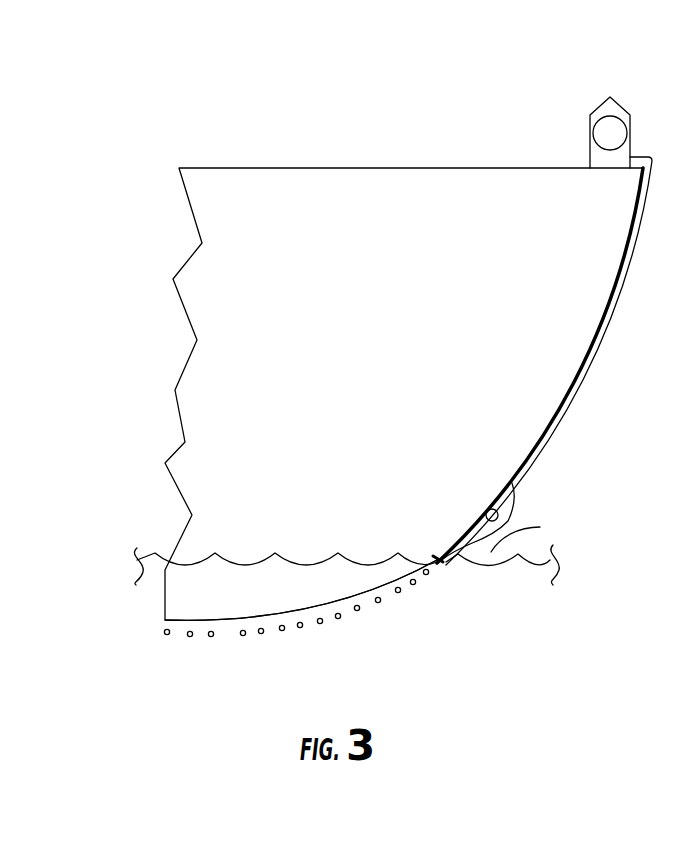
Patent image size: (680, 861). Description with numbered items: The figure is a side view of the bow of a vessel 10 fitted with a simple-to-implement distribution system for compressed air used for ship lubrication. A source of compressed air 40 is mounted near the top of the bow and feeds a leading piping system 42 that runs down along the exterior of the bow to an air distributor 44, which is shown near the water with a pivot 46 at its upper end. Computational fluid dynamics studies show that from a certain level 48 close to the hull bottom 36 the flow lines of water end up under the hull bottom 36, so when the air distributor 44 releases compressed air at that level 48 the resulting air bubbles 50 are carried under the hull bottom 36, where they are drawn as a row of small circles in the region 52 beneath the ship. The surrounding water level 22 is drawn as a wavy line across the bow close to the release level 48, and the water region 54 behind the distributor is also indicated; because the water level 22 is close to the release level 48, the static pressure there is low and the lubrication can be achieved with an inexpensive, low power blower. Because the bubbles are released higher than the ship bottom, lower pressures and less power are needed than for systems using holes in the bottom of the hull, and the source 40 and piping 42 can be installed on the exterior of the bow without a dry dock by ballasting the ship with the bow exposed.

The watercraft hull body 10 is at (313, 205).
The surrounding water level 22 is at (363, 548).
The hull bottom 36 is at (226, 637).
The source of compressed air 40 is at (622, 88).
The leading piping system 42 is at (608, 325).
The air distributor 44 is at (521, 503).
The pivot pin 46 is at (487, 498).
The level 48 is at (442, 575).
The air bubbles 50 is at (408, 604).
The region below hull 52 is at (325, 684).
The water region behind flap 54 is at (526, 528).